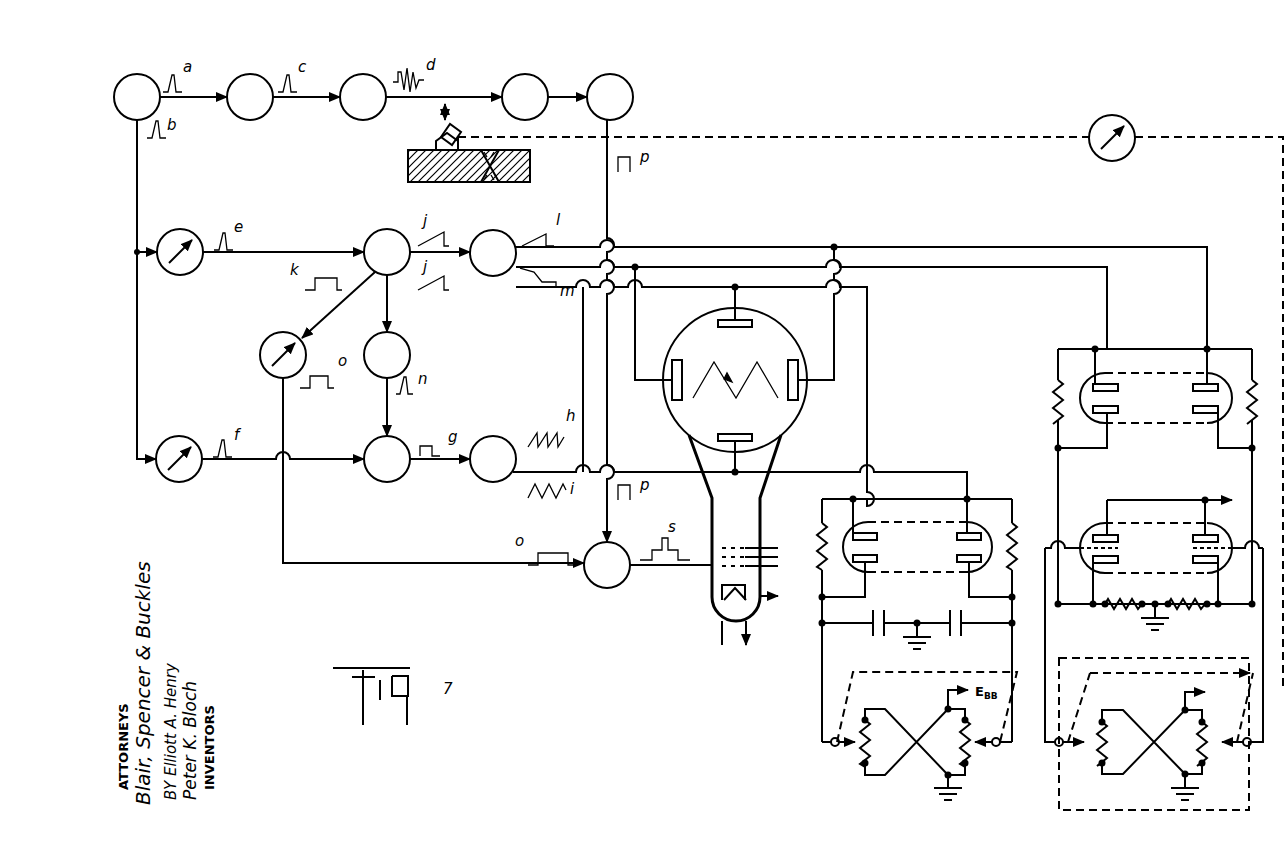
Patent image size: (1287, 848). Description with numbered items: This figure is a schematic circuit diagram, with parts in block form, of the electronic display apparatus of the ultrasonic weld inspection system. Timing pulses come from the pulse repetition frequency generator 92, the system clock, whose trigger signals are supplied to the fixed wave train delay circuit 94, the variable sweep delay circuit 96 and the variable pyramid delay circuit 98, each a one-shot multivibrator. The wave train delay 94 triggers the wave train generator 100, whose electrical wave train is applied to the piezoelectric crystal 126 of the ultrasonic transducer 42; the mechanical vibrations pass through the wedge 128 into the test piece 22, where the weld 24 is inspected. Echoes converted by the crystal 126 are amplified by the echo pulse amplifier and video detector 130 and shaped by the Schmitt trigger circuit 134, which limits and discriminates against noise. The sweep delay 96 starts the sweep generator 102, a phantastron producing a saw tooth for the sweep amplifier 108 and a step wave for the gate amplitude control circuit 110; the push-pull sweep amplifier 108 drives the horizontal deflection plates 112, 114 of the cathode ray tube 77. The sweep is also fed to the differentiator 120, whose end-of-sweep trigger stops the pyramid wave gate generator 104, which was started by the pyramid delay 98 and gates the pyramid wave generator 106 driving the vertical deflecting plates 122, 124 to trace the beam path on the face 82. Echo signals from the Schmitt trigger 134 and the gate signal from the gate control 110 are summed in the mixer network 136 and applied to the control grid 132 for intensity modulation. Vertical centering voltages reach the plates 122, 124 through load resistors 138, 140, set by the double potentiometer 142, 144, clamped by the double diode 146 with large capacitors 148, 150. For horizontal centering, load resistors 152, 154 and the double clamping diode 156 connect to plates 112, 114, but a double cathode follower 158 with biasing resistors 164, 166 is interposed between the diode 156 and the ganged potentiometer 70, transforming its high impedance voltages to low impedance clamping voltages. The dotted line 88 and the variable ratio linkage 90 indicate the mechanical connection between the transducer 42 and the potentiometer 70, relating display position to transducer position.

The pulse repetition frequency generator 92 is at (148, 106).
The fixed wave train delay circuit 94 is at (261, 106).
The wave train generator 100 is at (377, 106).
The echo pulse amplifier and video detector 130 is at (539, 106).
The Schmitt trigger circuit 134 is at (624, 106).
The ultrasonic transducer 42 is at (482, 115).
The piezoelectric crystal 126 is at (441, 134).
The wedge 128 is at (436, 146).
The test piece 22 is at (410, 160).
The weld 24 is at (502, 166).
The dotted line 88 is at (740, 132).
The variable ratio linkage 90 is at (1128, 156).
The variable sweep delay circuit 96 is at (196, 270).
The sweep generator 102 is at (401, 261).
The sweep amplifier 108 is at (507, 262).
The gate amplitude control circuit 110 is at (276, 334).
The differentiator 120 is at (401, 364).
The variable pyramid delay circuit 98 is at (168, 437).
The pyramid wave gate generator 104 is at (401, 468).
The pyramid wave generator 106 is at (507, 468).
The mixer network 136 is at (621, 574).
The cathode ray tube 77 is at (800, 443).
The face of the cathode ray tube 82 is at (772, 332).
The vertical deflecting plate 122 is at (728, 330).
The vertical deflecting plate 124 is at (730, 436).
The horizontal deflection plate 112 is at (674, 396).
The horizontal deflection plate 114 is at (790, 360).
The control grid 132 is at (714, 570).
The load resistor 138 is at (818, 540).
The load resistor 140 is at (1016, 540).
The double diode 146 is at (916, 525).
The large capacitor 148 is at (870, 630).
The large capacitor 150 is at (960, 630).
The double potentiometer 142 is at (860, 755).
The double potentiometer 144 is at (970, 750).
The load resistor 152 is at (1052, 396).
The load resistor 154 is at (1256, 372).
The double clamping diode 156 is at (1154, 370).
The double cathode follower 158 is at (1152, 522).
The biasing resistor 164 is at (1120, 610).
The biasing resistor 166 is at (1188, 608).
The ganged potentiometer 70 is at (1250, 774).